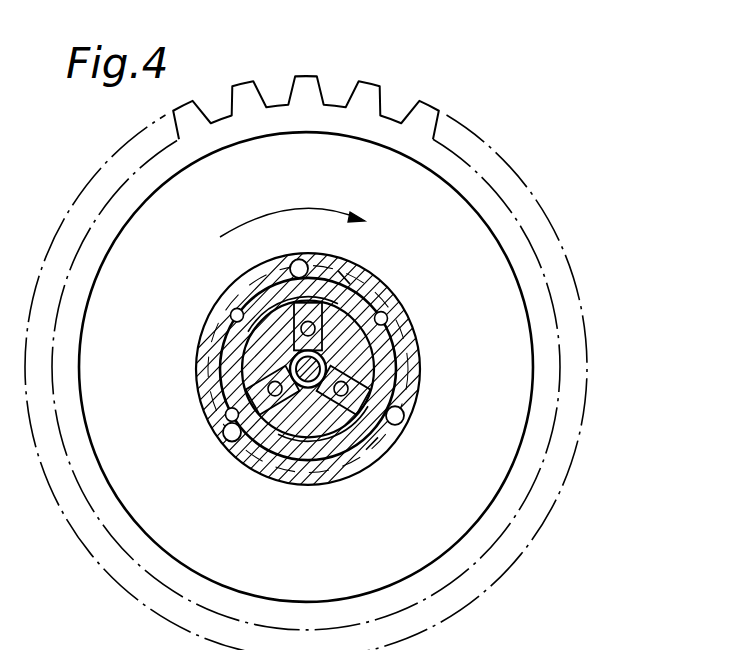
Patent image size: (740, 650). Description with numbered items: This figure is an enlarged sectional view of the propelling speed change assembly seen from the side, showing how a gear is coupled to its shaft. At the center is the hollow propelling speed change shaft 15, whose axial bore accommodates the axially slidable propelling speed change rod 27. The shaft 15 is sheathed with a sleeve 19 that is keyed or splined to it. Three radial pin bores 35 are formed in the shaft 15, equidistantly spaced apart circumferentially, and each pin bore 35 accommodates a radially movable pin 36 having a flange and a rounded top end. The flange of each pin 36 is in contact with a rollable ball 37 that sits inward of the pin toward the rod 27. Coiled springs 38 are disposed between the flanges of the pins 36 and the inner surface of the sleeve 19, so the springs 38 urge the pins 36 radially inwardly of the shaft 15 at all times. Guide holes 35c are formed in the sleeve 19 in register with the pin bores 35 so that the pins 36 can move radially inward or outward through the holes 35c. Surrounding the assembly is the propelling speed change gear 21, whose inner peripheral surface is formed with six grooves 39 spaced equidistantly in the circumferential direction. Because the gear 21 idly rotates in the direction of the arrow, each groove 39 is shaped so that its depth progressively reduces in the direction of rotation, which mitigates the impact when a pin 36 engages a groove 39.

The propelling speed change gear 21 is at (86, 178).
The propelling speed change shaft 15 is at (357, 470).
The coiled spring 38 is at (262, 458).
The rollable ball 37 is at (310, 437).
The propelling speed change rod 27 is at (290, 357).
The pin bore 35 is at (348, 332).
The guide hole 35c is at (345, 275).
The sleeve 19 is at (343, 303).
The groove 39 is at (235, 318).
The pin 36 is at (300, 268).